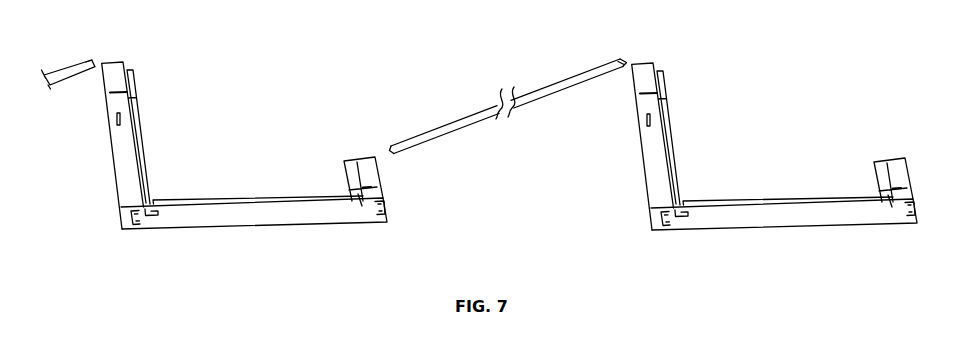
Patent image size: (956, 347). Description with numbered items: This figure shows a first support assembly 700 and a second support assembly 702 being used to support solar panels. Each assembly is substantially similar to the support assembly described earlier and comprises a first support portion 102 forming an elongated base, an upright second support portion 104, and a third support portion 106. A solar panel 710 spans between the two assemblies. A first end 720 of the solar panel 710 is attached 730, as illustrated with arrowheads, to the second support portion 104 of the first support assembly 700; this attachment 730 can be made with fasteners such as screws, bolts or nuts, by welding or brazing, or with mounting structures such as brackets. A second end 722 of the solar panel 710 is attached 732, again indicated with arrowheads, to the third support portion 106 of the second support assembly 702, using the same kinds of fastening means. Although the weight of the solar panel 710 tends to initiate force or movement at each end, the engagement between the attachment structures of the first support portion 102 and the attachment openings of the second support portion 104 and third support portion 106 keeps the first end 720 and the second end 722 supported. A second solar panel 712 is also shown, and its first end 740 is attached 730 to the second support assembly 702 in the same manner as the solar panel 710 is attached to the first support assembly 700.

The first support assembly 700 is at (769, 86).
The second support assembly 702 is at (245, 78).
The first support portion 102 is at (245, 216).
The second support portion 104 is at (128, 118).
The third support portion 106 is at (363, 165).
The solar panel 710 is at (438, 127).
The second solar panel 712 is at (52, 74).
The first end 720 is at (622, 53).
The second end 722 is at (391, 150).
The attachment 730 is at (95, 79).
The attachment 732 is at (387, 161).
The first end 740 is at (88, 62).